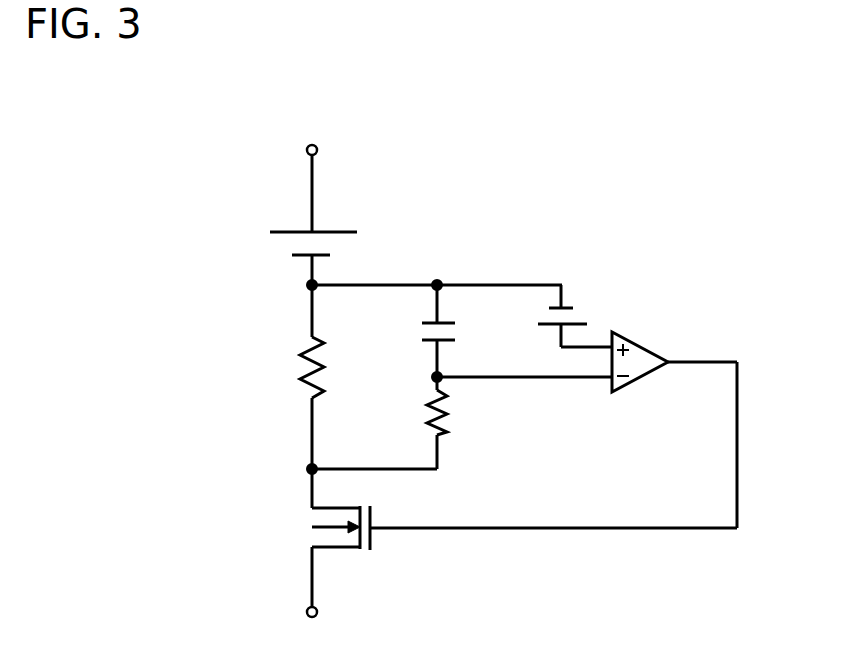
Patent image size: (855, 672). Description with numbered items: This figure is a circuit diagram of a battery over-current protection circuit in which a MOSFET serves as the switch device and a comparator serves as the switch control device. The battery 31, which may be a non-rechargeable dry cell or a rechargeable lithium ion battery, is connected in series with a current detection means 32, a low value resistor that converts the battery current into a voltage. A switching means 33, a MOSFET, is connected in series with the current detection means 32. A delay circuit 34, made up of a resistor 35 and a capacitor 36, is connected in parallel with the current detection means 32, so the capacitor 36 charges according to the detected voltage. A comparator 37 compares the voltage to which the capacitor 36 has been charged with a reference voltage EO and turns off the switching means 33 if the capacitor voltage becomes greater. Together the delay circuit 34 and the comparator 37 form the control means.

The battery 31 is at (290, 243).
The current detection means 32 is at (298, 366).
The switching means 33 is at (308, 533).
The delay circuit 34 is at (462, 377).
The resistor 35 is at (452, 422).
The capacitor 36 is at (457, 332).
The comparator 37 is at (655, 372).
The reference voltage EO is at (579, 313).